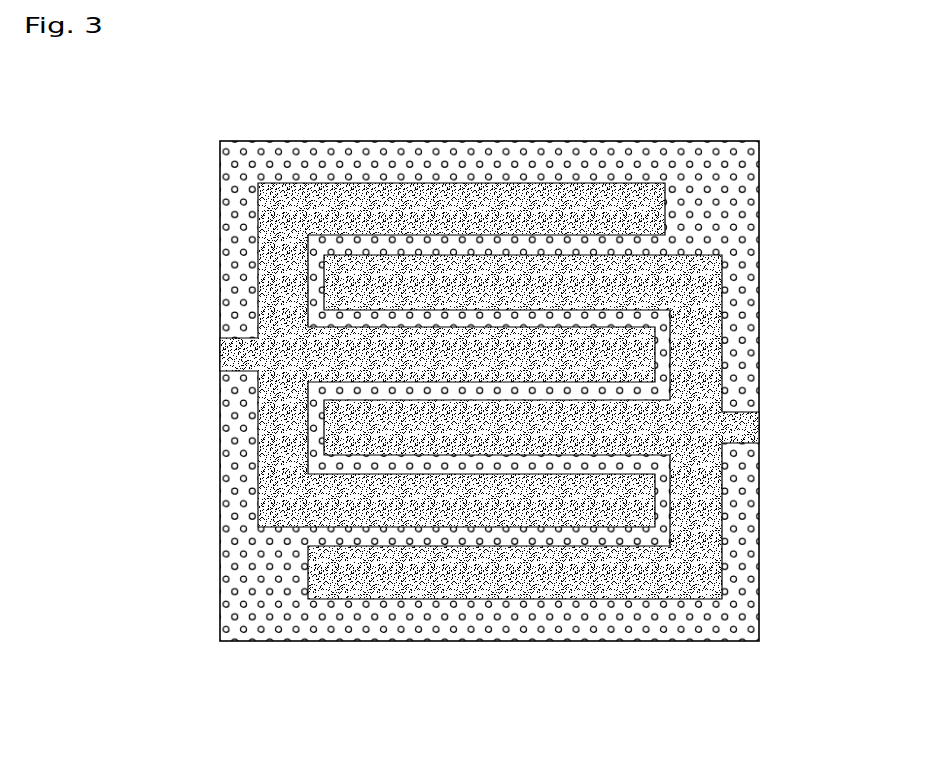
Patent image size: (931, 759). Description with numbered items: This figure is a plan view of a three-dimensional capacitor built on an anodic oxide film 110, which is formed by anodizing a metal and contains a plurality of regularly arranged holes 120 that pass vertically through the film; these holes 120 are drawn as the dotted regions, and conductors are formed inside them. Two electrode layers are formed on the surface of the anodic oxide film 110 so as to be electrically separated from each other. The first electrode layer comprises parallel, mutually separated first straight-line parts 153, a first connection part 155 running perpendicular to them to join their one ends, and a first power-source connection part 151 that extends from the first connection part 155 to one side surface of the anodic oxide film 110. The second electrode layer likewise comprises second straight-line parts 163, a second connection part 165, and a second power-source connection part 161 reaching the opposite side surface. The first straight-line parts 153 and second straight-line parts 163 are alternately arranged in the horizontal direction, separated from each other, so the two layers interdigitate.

The anodic oxide film 110 is at (489, 434).
The holes 120 is at (398, 392).
The first power-source connection part 151 is at (785, 432).
The first straight-line parts 153 is at (489, 474).
The first connection part 155 is at (753, 427).
The second power-source connection part 161 is at (186, 358).
The second straight-line parts 163 is at (402, 379).
The second connection part 165 is at (222, 355).